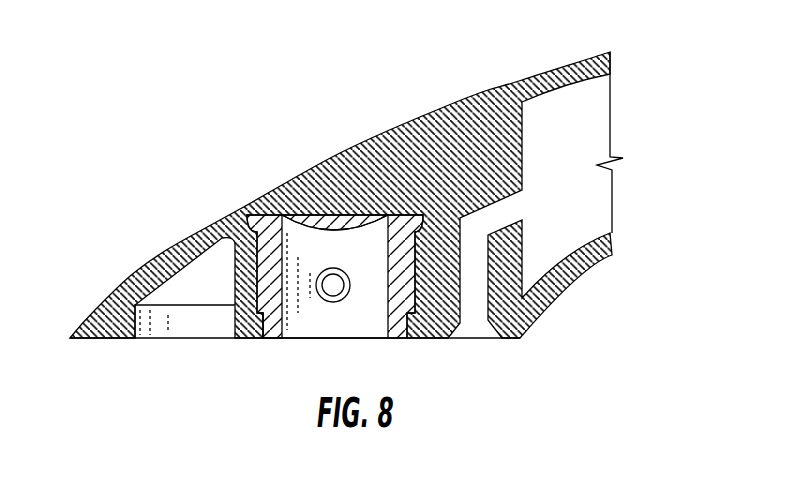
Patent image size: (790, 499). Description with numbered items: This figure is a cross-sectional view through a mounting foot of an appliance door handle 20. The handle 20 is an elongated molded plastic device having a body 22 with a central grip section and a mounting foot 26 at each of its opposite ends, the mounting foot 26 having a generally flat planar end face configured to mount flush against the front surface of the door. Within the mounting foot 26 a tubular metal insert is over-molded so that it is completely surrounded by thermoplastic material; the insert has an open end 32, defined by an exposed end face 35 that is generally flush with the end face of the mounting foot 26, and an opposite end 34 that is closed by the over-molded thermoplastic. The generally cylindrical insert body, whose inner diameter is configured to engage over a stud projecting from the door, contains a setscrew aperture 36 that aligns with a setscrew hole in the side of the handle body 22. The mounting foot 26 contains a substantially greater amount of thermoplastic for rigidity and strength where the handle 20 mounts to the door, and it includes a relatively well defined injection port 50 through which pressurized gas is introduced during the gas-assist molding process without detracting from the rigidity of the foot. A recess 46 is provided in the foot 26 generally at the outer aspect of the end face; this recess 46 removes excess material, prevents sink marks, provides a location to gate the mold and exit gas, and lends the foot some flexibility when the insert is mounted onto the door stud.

The handle 20 is at (345, 84).
The body 22 is at (577, 280).
The mounting foot 26 is at (483, 84).
The open end 32 is at (368, 339).
The opposite end 34 is at (303, 212).
The exposed end face 35 is at (274, 339).
The setscrew aperture 36 is at (333, 285).
The recess 46 is at (187, 323).
The injection port 50 is at (473, 339).